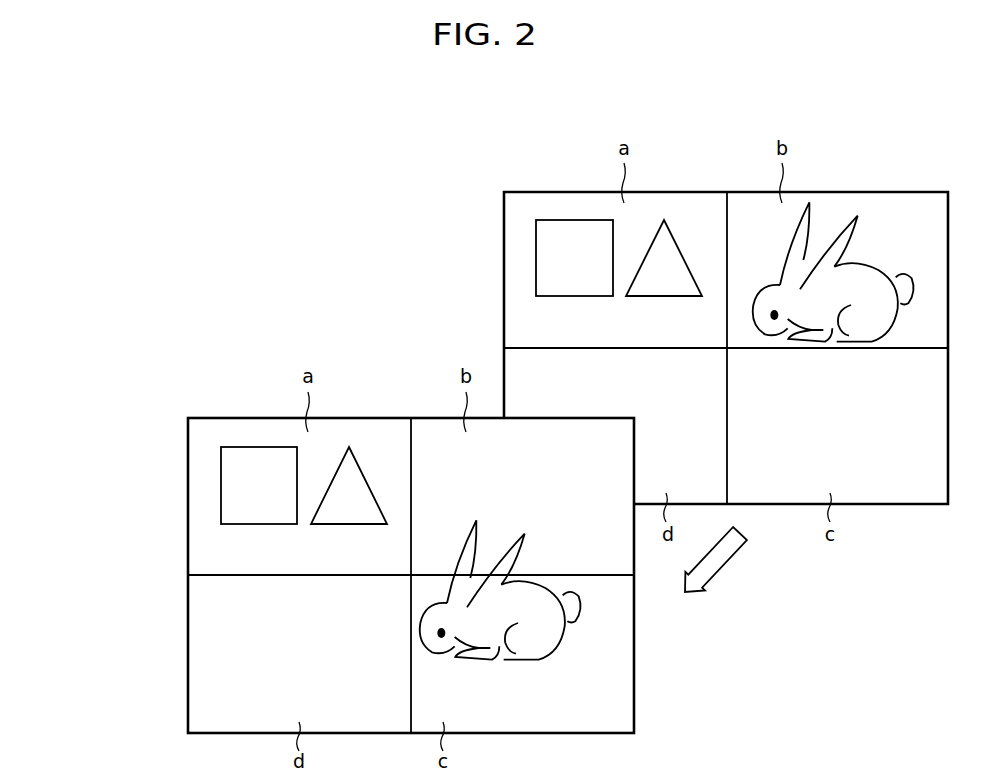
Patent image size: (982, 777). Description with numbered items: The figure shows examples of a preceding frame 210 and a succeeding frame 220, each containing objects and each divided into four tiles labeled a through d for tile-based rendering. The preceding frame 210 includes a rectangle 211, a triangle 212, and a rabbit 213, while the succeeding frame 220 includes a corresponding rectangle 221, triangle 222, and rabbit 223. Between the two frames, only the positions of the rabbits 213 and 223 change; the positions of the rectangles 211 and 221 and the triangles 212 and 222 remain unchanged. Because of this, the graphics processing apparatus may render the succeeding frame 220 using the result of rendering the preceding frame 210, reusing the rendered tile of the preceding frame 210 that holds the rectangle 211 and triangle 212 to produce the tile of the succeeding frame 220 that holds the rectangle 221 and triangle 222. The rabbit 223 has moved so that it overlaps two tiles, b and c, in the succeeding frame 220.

The preceding frame 210 is at (504, 244).
The rectangle 211 is at (574, 297).
The triangle 212 is at (664, 297).
The rabbit 213 is at (826, 341).
The succeeding frame 220 is at (188, 470).
The rectangle 221 is at (258, 525).
The triangle 222 is at (349, 525).
The rabbit 223 is at (478, 662).